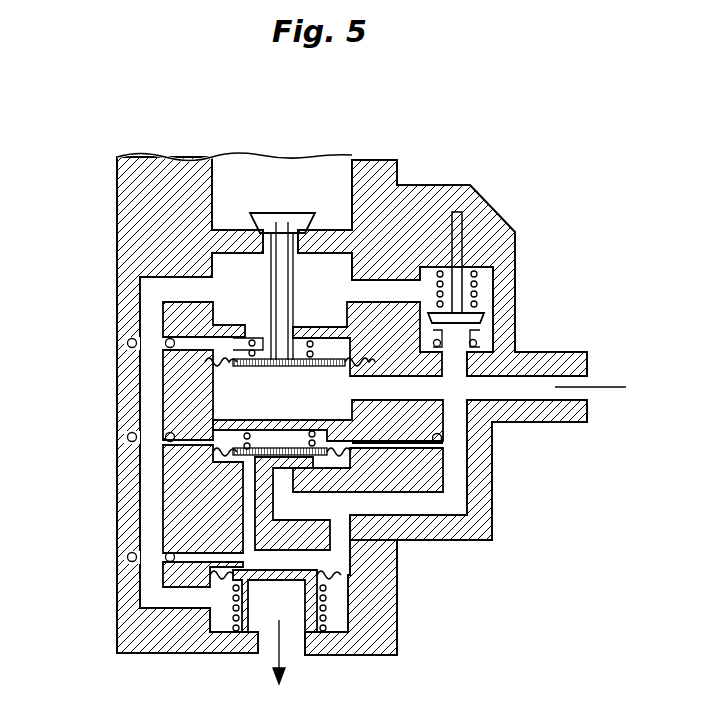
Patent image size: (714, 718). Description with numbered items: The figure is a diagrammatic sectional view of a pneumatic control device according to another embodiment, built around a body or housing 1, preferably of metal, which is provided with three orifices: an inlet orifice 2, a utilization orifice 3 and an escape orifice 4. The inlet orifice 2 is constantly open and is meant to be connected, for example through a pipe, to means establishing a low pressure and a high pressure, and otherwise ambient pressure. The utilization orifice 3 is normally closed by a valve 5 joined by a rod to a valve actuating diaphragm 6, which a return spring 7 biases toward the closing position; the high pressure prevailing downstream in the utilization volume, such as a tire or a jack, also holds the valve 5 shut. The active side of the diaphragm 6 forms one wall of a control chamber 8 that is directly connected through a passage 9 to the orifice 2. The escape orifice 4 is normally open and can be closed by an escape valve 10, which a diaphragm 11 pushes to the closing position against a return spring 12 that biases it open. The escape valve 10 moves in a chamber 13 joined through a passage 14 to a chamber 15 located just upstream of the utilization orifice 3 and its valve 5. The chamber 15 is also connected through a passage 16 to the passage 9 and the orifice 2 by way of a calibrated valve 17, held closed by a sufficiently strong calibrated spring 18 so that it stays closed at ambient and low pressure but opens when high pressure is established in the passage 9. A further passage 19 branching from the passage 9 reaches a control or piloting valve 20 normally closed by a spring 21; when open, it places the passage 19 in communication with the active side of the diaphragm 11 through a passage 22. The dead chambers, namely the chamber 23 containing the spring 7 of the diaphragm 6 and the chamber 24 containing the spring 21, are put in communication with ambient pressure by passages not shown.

The body or housing 1 is at (488, 218).
The inlet orifice 2 is at (545, 386).
The utilization orifice 3 is at (236, 173).
The escape orifice 4 is at (270, 650).
The valve 5 is at (280, 213).
The valve actuating diaphragm 6 is at (245, 368).
The return spring 7 is at (262, 345).
The control chamber 8 is at (240, 390).
The passage 9 is at (432, 442).
The escape valve 10 is at (300, 625).
The diaphragm 11 is at (345, 545).
The return spring 12 is at (360, 598).
The chamber 13 is at (228, 613).
The passage 14 is at (150, 545).
The chamber 15 is at (235, 272).
The passage 16 is at (395, 290).
The calibrated valve 17 is at (482, 316).
The calibrated spring 18 is at (475, 283).
The passage 19 is at (440, 500).
The control or piloting valve 20 is at (248, 470).
The spring 21 is at (262, 445).
The passage 22 is at (258, 522).
The chamber 23 is at (305, 343).
The chamber 24 is at (240, 440).